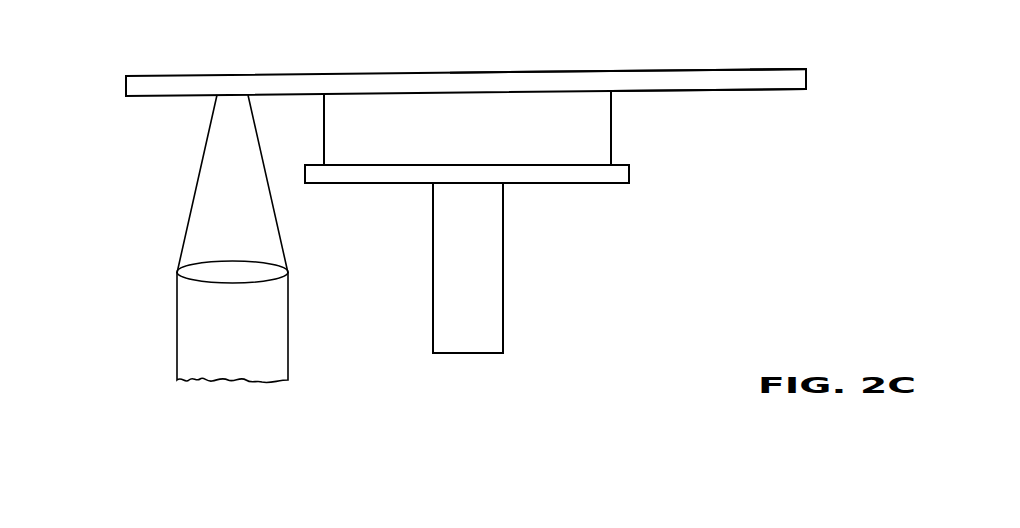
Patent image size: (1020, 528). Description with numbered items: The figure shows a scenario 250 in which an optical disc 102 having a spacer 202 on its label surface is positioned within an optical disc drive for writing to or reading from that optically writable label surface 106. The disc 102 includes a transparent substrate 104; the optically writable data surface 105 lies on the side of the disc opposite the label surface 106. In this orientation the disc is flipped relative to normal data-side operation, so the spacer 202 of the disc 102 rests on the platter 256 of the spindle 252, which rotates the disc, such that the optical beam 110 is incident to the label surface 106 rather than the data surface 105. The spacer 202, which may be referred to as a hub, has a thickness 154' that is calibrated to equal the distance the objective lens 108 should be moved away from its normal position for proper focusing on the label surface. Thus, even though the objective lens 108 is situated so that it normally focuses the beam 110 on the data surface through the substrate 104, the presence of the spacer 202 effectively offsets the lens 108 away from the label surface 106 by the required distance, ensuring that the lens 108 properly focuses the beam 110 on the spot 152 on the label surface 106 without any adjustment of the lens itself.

The optical disc 102 is at (126, 87).
The transparent substrate 104 is at (700, 78).
The optically writable data surface 105 is at (755, 83).
The optically writable label surface 106 is at (708, 92).
The objective lens 108 is at (177, 272).
The optical beam 110 is at (253, 344).
The spot 152 is at (207, 85).
The thickness 154' is at (296, 130).
The spacer 202 is at (604, 131).
The scenario 250 is at (105, 340).
The spindle 252 is at (479, 346).
The platter 256 is at (393, 185).